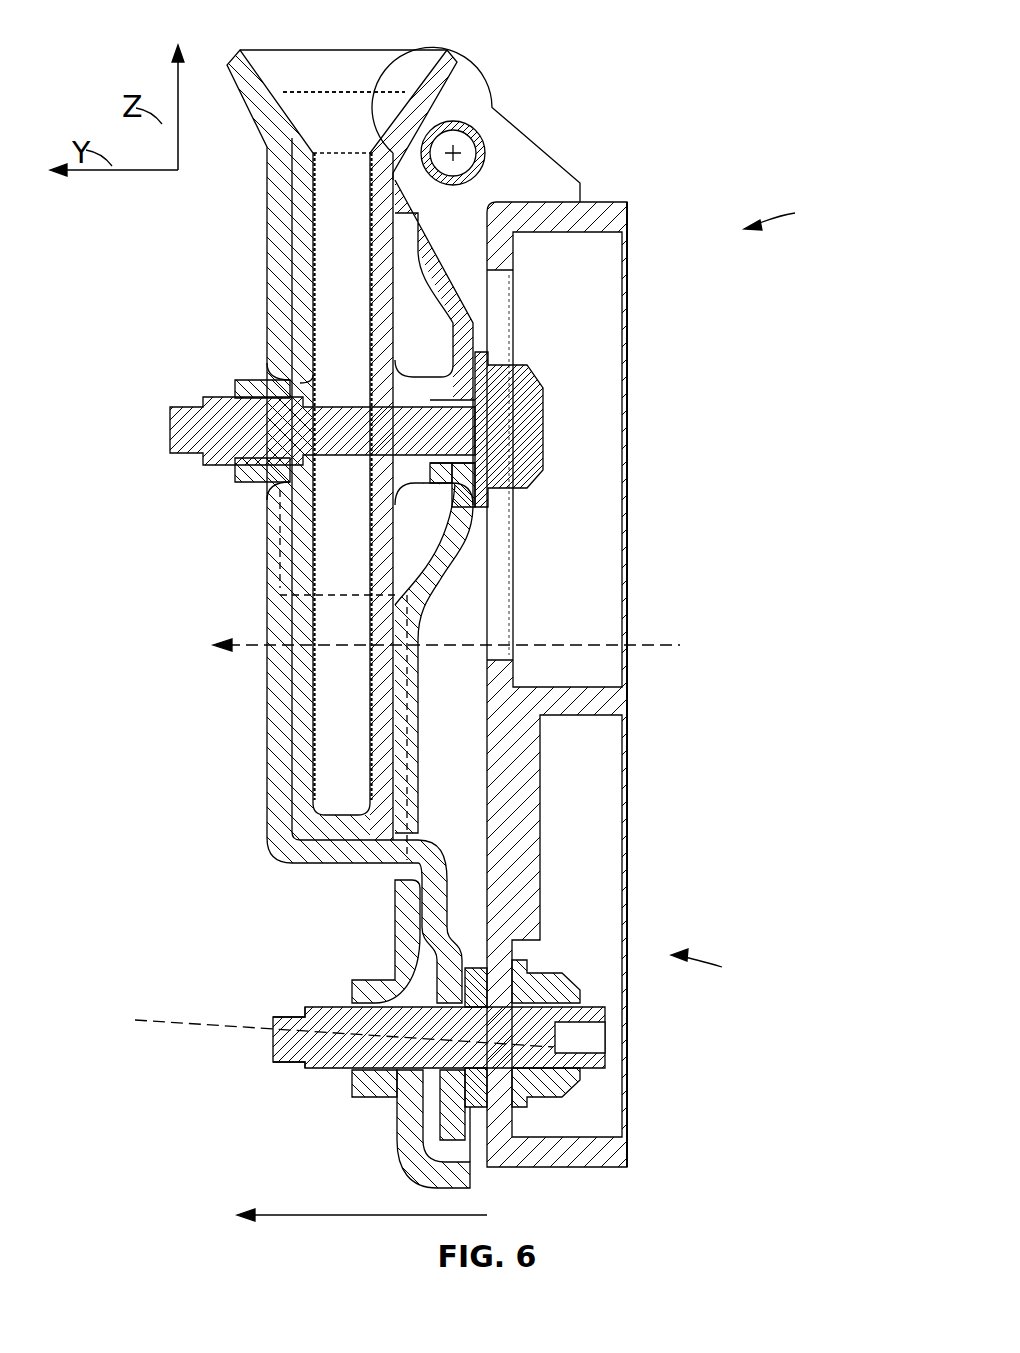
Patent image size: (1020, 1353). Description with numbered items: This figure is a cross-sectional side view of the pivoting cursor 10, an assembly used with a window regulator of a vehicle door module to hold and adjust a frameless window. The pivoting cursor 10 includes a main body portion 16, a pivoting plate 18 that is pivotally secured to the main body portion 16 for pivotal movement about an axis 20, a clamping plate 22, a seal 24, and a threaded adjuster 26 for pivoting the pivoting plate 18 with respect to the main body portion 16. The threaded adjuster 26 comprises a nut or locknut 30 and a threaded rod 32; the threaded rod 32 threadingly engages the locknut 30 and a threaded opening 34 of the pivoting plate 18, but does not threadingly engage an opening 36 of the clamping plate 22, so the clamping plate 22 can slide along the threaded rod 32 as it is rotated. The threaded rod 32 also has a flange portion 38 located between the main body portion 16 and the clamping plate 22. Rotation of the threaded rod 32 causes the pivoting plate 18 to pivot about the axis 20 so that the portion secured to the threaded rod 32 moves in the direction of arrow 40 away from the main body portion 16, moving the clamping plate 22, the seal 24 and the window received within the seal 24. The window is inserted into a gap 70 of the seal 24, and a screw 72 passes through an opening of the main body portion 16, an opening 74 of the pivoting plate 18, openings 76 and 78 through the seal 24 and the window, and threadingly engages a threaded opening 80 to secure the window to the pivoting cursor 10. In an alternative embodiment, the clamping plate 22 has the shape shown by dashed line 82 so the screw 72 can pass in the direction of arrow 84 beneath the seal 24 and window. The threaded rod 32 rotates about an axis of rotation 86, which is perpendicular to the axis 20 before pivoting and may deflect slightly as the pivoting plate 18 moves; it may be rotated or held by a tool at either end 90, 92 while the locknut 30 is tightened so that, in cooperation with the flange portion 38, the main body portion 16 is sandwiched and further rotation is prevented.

The pivoting cursor 10 is at (787, 212).
The main body portion 16 is at (526, 767).
The pivoting plate 18 is at (400, 1142).
The axis 20 is at (458, 150).
The clamping plate 22 is at (293, 845).
The seal 24 is at (292, 118).
The threaded adjuster 26 is at (716, 968).
The nut or locknut 30 is at (550, 1086).
The threaded rod, screw, threaded fastener, fastener or equivalents thereof 32 is at (606, 1056).
The threaded opening 34 is at (378, 1002).
The opening 36 is at (404, 1100).
The flange portion 38 is at (480, 1092).
The arrow 40 is at (288, 1225).
The gap 70 is at (340, 118).
The screw, threaded fastener, fastener or equivalents thereof 72 is at (507, 420).
The opening 74 is at (455, 472).
The opening 76 is at (433, 390).
The opening 78 is at (340, 390).
The threaded opening 80 is at (236, 470).
The dashed line 82 is at (276, 584).
The arrow 84 is at (237, 639).
The axis of rotation 86 is at (146, 1020).
The end 90 is at (606, 1017).
The end 92 is at (292, 1016).